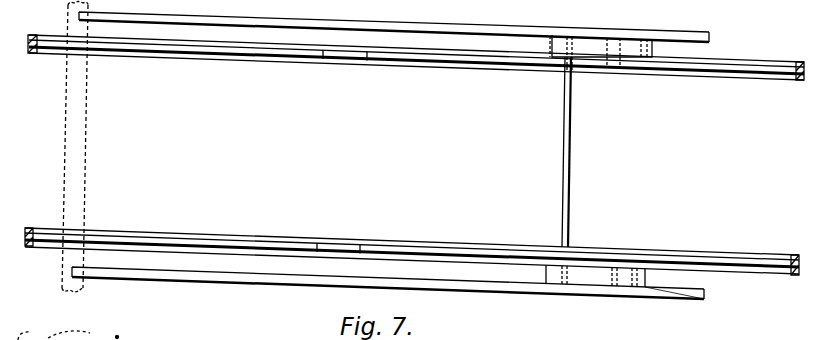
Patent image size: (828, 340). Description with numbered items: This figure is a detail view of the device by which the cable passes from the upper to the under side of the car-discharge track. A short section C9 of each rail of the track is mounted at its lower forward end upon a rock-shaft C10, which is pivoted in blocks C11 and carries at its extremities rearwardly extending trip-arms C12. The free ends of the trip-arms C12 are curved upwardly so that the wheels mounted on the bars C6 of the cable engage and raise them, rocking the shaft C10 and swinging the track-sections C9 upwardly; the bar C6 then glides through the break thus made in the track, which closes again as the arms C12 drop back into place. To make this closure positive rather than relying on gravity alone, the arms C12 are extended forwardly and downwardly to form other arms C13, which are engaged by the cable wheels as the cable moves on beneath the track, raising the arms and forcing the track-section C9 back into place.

The bar C6 is at (75, 147).
The short section of rail C9 is at (482, 72).
The rock-shaft C10 is at (569, 178).
The blocks C11 is at (599, 161).
The trip-arms C12 is at (446, 28).
The arms C13 is at (692, 33).